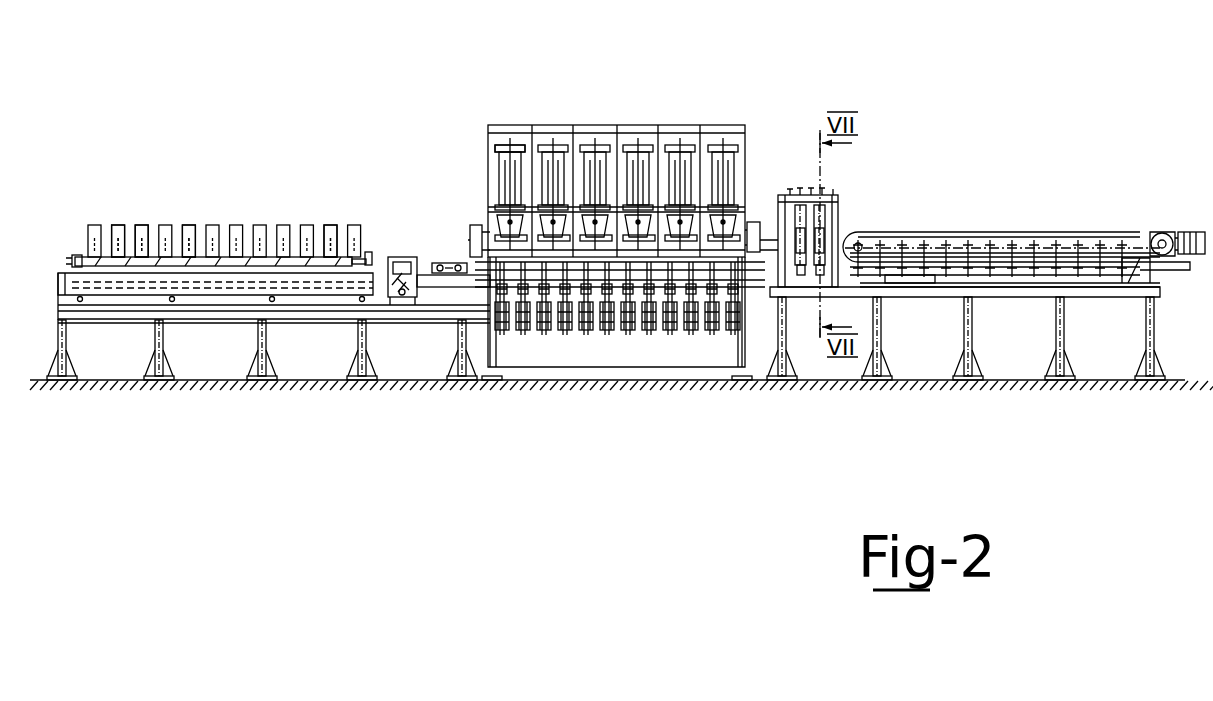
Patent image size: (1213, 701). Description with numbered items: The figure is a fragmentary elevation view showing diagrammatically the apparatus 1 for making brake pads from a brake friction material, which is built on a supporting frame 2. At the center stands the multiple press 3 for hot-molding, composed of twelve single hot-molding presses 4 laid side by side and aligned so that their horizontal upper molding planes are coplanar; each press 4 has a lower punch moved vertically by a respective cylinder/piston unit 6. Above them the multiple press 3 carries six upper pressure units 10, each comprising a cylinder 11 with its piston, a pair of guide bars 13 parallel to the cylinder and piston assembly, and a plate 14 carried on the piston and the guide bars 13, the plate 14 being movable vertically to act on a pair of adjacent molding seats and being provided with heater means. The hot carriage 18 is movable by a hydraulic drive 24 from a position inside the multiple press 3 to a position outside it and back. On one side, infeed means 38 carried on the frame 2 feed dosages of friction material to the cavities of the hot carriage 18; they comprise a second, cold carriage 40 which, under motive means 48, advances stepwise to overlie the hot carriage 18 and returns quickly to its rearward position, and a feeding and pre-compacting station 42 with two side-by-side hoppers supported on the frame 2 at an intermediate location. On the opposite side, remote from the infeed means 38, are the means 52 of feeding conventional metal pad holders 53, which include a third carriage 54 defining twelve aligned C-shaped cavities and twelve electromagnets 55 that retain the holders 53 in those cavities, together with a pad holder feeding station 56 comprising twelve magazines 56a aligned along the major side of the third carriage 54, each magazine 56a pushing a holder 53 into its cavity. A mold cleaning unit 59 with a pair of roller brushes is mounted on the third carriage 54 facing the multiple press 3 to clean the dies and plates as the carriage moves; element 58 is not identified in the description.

The apparatus 1 is at (546, 473).
The supporting frame 2 is at (747, 345).
The multiple press 3 is at (697, 86).
The single hot-molding press 4 is at (670, 342).
The cylinder/piston unit 6 is at (548, 336).
The upper pressure unit 10 is at (512, 117).
The cylinder 11 is at (488, 140).
The guide bars 13 is at (495, 163).
The plate 14 is at (488, 218).
The hot carriage 18 is at (567, 265).
The hydraulic drive 24 is at (493, 316).
The infeed means 38 is at (947, 139).
The second carriage 40 is at (1000, 245).
The feeding and pre-compacting station 42 is at (795, 176).
The motive means 48 is at (1173, 225).
The means of feeding metal holders 52 is at (184, 405).
The metal pad holder 53 is at (93, 263).
The third carriage 54 is at (252, 268).
The electromagnets 55 is at (90, 258).
The pad holder feeding station 56 is at (280, 210).
The magazine 56a is at (118, 225).
The feed unit housing 58 is at (404, 243).
The mold cleaning unit 59 is at (398, 300).